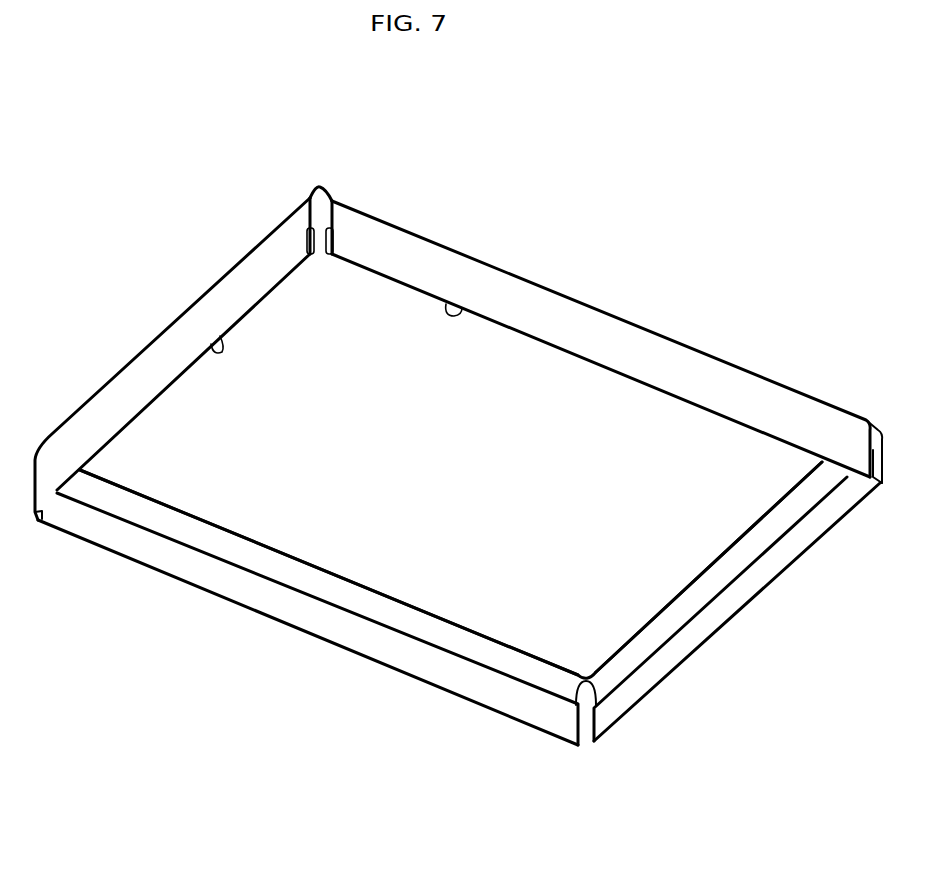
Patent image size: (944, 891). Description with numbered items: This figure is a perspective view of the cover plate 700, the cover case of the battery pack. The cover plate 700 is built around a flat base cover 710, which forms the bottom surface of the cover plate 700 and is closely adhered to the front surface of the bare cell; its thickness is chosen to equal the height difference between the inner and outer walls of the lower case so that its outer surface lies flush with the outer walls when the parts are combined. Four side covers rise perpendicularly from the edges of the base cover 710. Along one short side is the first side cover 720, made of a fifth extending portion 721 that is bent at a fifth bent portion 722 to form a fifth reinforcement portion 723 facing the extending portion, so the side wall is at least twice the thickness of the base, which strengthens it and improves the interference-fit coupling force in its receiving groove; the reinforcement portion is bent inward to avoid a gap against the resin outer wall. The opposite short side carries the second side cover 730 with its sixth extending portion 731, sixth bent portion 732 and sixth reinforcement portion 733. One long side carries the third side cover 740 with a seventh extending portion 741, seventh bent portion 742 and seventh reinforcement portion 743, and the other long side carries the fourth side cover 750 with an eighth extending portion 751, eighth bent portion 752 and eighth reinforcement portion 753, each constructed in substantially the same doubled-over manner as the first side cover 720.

The cover plate 700 is at (262, 151).
The base cover 710 is at (653, 446).
The first side cover 720 is at (183, 182).
The fifth extending portion 721 is at (145, 368).
The fifth bent portion 722 is at (211, 350).
The fifth reinforcement portion 723 is at (310, 241).
The second side cover 730 is at (838, 651).
The sixth extending portion 731 is at (653, 640).
The sixth bent portion 732 is at (713, 632).
The sixth reinforcement portion 733 is at (753, 577).
The third side cover 740 is at (312, 758).
The seventh extending portion 741 is at (237, 552).
The seventh bent portion 742 is at (278, 615).
The seventh reinforcement portion 743 is at (350, 635).
The fourth side cover 750 is at (612, 214).
The eighth extending portion 751 is at (537, 312).
The eighth bent portion 752 is at (462, 310).
The eighth reinforcement portion 753 is at (333, 232).